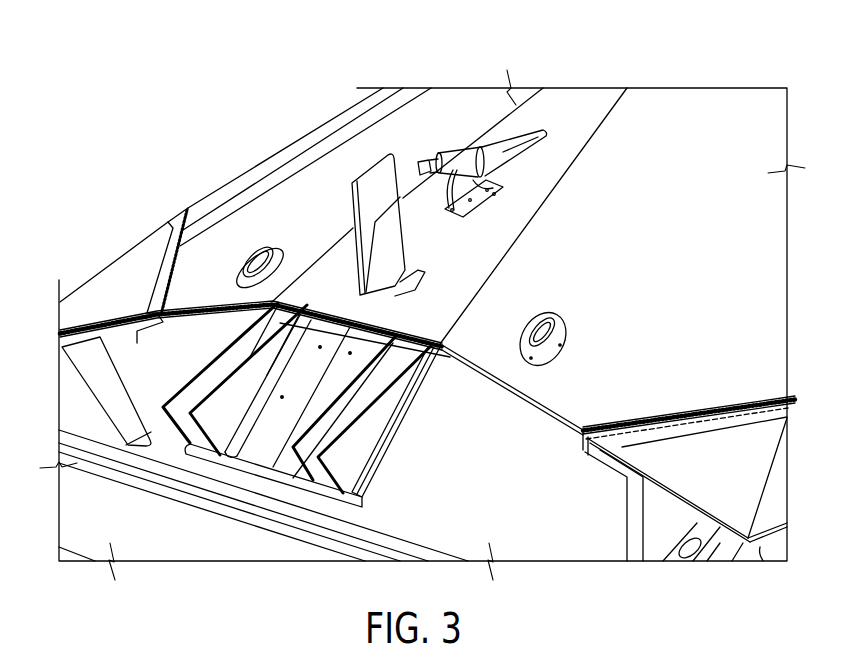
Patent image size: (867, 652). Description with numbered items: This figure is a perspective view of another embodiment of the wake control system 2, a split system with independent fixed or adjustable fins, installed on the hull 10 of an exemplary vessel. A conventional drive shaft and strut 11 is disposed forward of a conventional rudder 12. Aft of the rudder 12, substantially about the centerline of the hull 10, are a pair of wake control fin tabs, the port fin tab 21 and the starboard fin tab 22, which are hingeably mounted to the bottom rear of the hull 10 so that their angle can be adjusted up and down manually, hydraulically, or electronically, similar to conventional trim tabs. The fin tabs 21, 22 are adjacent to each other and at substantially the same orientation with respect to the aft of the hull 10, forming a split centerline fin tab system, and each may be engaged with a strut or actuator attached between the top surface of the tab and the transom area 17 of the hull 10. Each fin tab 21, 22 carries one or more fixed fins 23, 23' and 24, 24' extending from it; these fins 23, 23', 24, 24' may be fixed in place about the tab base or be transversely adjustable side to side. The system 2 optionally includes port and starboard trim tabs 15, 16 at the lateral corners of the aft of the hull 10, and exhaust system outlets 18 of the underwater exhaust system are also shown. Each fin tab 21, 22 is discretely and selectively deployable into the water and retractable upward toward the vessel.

The wake control system 2 is at (313, 178).
The hull 10 is at (705, 127).
The drive shaft and strut 11 is at (470, 183).
The rudder 12 is at (393, 252).
The port trim tab 15 is at (732, 458).
The starboard trim tab 16 is at (125, 278).
The transom area 17 is at (493, 473).
The exhaust system outlets 18 is at (253, 257).
The port fin tab 21 is at (397, 418).
The starboard fin tab 22 is at (257, 453).
The fixed fin 23 is at (329, 453).
The fixed fin 23' is at (294, 444).
The fixed fin 24 is at (248, 380).
The fixed fin 24' is at (220, 373).